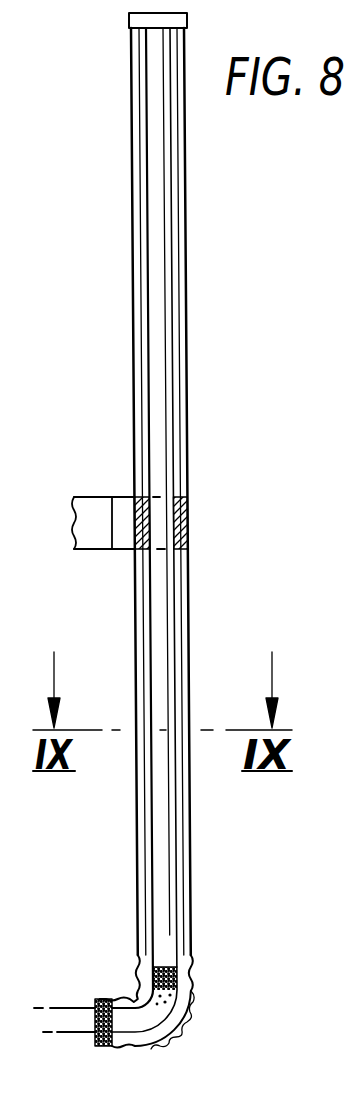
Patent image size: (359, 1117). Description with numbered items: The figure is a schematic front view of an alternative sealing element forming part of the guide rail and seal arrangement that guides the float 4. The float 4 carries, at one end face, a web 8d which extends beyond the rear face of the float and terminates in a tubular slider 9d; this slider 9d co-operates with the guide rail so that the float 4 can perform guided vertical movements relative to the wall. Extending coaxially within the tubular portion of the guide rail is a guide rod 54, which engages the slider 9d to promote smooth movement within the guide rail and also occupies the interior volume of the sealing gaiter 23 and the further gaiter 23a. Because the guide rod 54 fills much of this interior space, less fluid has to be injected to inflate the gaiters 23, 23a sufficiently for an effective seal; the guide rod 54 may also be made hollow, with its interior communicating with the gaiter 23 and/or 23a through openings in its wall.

The float 4 is at (93, 500).
The web 8d is at (126, 497).
The tubular slider 9d is at (188, 530).
The sealing gaiter 23 is at (183, 912).
The sealing gaiter 23a is at (183, 222).
The guide rod 54 is at (165, 840).